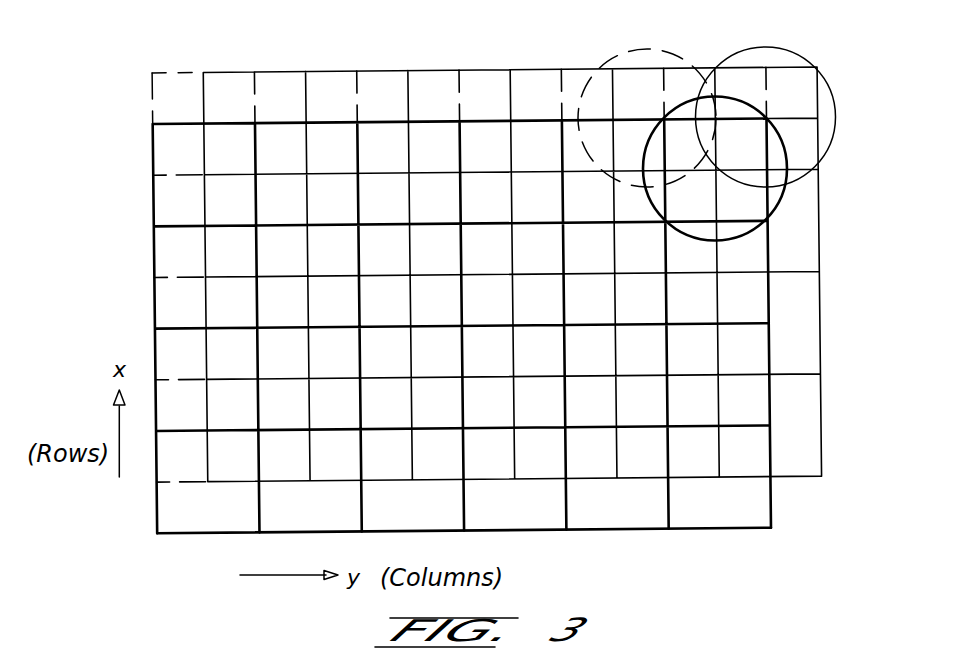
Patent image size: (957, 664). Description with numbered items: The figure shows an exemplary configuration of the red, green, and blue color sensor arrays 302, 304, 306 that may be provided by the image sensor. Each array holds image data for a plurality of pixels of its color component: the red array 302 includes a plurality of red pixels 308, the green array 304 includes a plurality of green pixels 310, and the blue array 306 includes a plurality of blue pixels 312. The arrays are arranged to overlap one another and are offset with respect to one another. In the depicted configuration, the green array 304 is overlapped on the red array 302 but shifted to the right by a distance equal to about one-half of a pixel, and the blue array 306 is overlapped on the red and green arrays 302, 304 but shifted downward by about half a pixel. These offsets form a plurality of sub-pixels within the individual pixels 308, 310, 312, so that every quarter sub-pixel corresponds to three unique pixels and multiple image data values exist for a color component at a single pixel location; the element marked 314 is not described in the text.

The red color sensor array 302 is at (163, 72).
The green color sensor array 304 is at (204, 90).
The blue color sensor array 306 is at (167, 122).
The red pixels 308 is at (616, 40).
The green pixels 310 is at (796, 40).
The blue pixels 312 is at (783, 223).
The bottom edge of second grid 314 is at (158, 519).